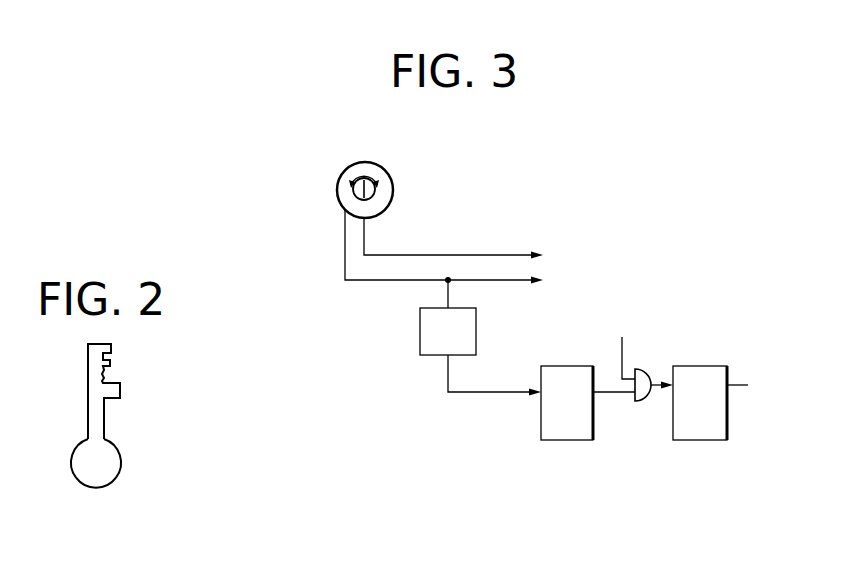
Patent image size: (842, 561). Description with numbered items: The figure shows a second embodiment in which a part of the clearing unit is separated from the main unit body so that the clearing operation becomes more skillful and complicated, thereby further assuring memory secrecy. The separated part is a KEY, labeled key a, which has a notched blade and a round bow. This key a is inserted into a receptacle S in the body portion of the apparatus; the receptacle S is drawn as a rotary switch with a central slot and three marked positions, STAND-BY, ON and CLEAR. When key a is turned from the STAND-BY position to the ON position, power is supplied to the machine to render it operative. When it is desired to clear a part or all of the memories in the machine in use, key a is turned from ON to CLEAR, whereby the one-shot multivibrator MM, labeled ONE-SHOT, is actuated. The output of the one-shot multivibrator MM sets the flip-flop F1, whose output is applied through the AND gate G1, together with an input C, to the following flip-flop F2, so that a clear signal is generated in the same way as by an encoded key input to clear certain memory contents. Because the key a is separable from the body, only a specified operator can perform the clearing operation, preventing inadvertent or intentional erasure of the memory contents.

In FIG. 2, the key KEY is at (92, 478).
In FIG. 2, the key a is at (88, 388).
In FIG. 3, the key a is at (356, 193).
In FIG. 3, the receptacle S is at (337, 192).
In FIG. 3, the ON position ON is at (364, 162).
In FIG. 3, the STAND-BY position STAND-BY is at (344, 180).
In FIG. 3, the CLEAR position CLEAR is at (385, 177).
In FIG. 3, the one-shot multivibrator MM is at (420, 336).
In FIG. 3, the one-shot multivibrator ONE-SHOT is at (476, 333).
In FIG. 3, the flip-flop F1 is at (565, 441).
In FIG. 3, the flip-flop F2 is at (700, 441).
In FIG. 3, the AND gate G1 is at (640, 402).
In FIG. 3, the clock input C is at (622, 344).